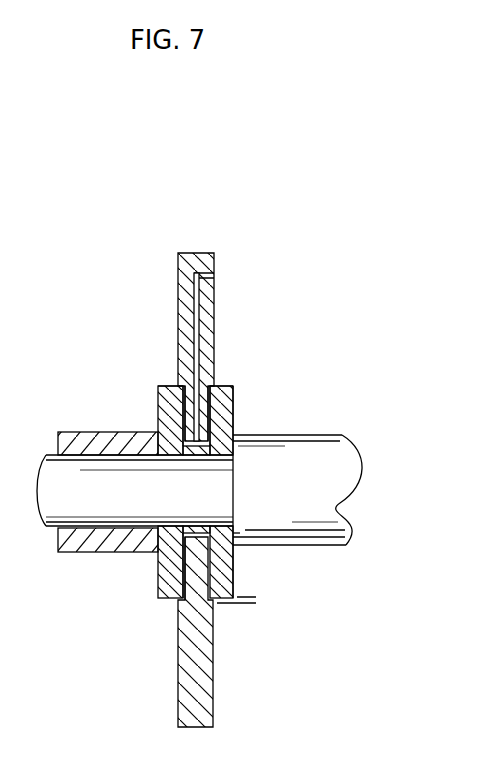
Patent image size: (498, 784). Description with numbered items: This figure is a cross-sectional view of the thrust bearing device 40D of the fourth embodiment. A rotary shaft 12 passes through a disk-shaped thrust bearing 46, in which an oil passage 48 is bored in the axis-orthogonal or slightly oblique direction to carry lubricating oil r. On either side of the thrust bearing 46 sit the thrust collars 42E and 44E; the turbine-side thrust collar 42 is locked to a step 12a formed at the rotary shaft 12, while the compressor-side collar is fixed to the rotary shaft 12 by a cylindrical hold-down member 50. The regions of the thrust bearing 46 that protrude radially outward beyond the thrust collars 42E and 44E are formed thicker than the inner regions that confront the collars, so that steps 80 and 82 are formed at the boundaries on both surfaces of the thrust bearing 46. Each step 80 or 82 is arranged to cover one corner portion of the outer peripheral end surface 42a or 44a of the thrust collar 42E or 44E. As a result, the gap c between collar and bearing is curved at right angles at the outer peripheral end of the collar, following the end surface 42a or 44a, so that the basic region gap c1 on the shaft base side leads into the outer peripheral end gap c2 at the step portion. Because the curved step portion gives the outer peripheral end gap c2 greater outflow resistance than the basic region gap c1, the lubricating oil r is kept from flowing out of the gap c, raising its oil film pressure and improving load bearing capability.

The thrust bearing device 40D is at (156, 299).
The thrust bearing 46 is at (200, 253).
The oil passage 48 is at (192, 306).
The lubricating oil r is at (219, 277).
The cylindrical hold-down member 50 is at (80, 432).
The thrust collar 44E is at (158, 406).
The thrust collar 42E is at (233, 406).
The outer peripheral end surface 44a is at (172, 386).
The outer peripheral end surface 42a is at (226, 386).
The step 82 is at (183, 388).
The step 80 is at (209, 388).
The rotary shaft 12 is at (340, 436).
The turbine-side thrust collar 42 is at (340, 528).
The step 12a is at (236, 536).
The basic region gap c1 is at (182, 559).
The gap c is at (182, 583).
The outer peripheral end gap c2 is at (244, 578).